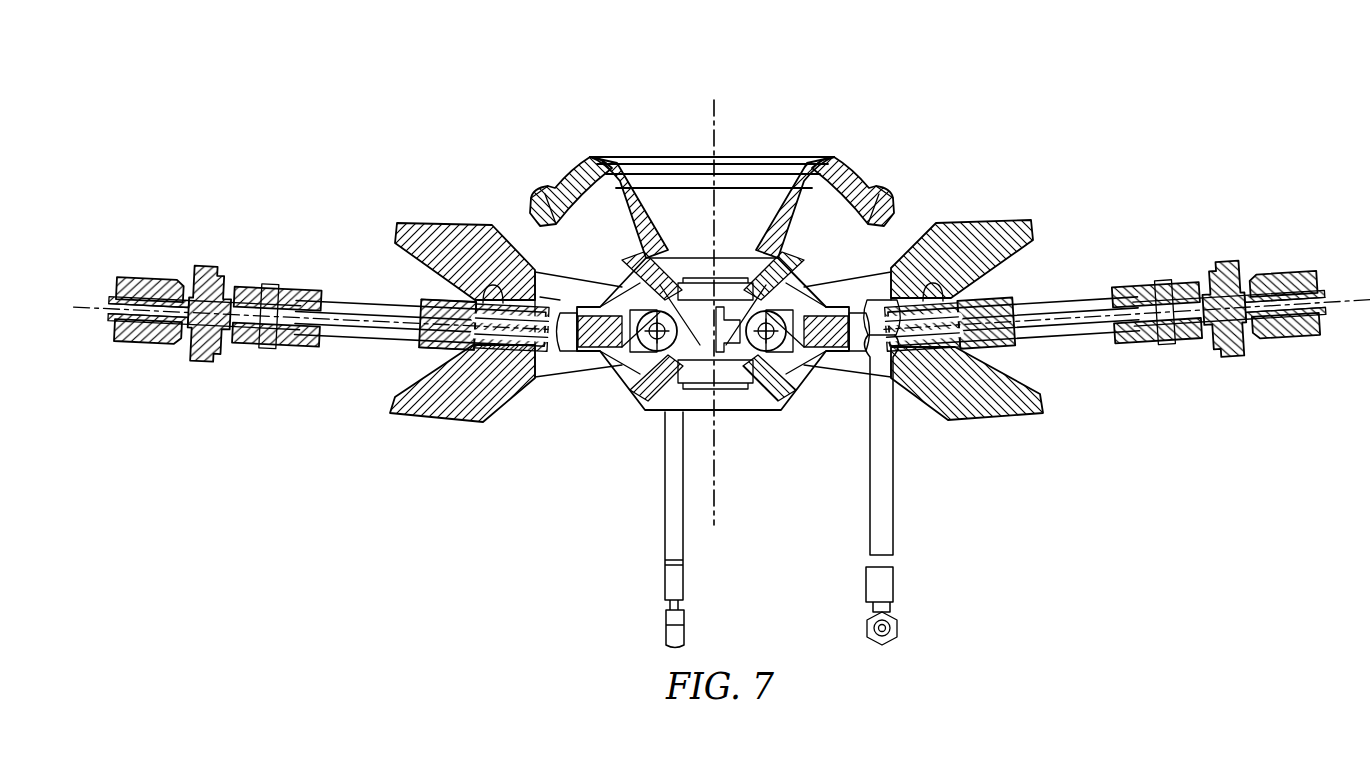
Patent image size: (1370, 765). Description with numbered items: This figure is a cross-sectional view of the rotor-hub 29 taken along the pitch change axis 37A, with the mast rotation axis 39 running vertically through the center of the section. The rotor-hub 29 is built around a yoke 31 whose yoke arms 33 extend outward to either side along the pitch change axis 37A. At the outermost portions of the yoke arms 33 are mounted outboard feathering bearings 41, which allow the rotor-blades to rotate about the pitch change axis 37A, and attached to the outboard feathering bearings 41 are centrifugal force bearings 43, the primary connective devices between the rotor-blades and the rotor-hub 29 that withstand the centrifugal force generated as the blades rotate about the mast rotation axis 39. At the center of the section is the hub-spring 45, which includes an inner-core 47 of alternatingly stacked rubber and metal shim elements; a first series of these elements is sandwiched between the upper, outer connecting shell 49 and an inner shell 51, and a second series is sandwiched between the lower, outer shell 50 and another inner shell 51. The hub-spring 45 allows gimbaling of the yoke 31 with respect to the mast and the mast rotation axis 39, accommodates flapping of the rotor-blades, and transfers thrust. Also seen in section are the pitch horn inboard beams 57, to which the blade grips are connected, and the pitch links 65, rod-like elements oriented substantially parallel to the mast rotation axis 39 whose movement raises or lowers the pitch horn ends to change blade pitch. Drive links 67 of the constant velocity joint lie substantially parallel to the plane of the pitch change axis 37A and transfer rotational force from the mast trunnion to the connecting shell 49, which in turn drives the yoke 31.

The rotor-hub 29 is at (586, 100).
The yoke 31 is at (375, 300).
The yoke arms 33 is at (352, 346).
The pitch change axis 37A is at (80, 304).
The mast rotation axis 39 is at (712, 104).
The outboard feathering bearings 41 is at (204, 268).
The centrifugal force bearings 43 is at (150, 270).
The hub-spring 45 is at (734, 170).
The inner-core 47 is at (668, 262).
The connecting shell 49 is at (756, 158).
The lower, outer shell 50 is at (800, 382).
The inner shell 51 is at (704, 277).
The pitch horn inboard beams 57 is at (445, 222).
The pitch links 65 is at (662, 535).
The drive links 67 is at (622, 283).